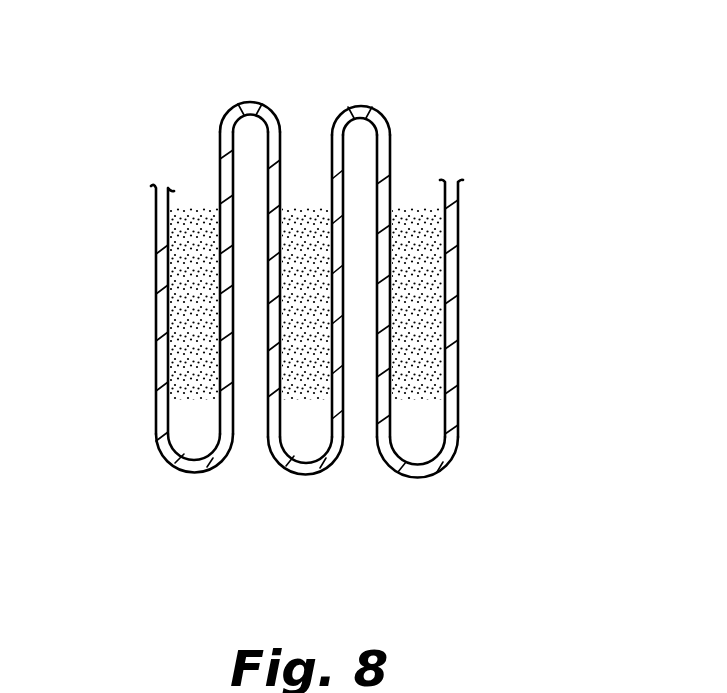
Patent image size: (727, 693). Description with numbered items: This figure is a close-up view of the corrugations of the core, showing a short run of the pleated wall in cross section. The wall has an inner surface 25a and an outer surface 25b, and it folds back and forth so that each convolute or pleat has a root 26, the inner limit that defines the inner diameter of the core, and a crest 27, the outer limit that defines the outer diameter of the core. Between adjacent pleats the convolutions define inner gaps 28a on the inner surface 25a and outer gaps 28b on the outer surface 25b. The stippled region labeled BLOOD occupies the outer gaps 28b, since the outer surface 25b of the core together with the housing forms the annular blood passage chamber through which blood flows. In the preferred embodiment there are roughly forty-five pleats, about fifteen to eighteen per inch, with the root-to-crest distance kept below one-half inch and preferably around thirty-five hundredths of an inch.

The inner surface 25a is at (155, 400).
The outer surface 25b is at (330, 140).
The root 26 is at (187, 468).
The crest 27 is at (247, 103).
The inner gaps 28a is at (245, 143).
The outer gaps 28b is at (307, 445).
The blood BLOOD is at (433, 322).